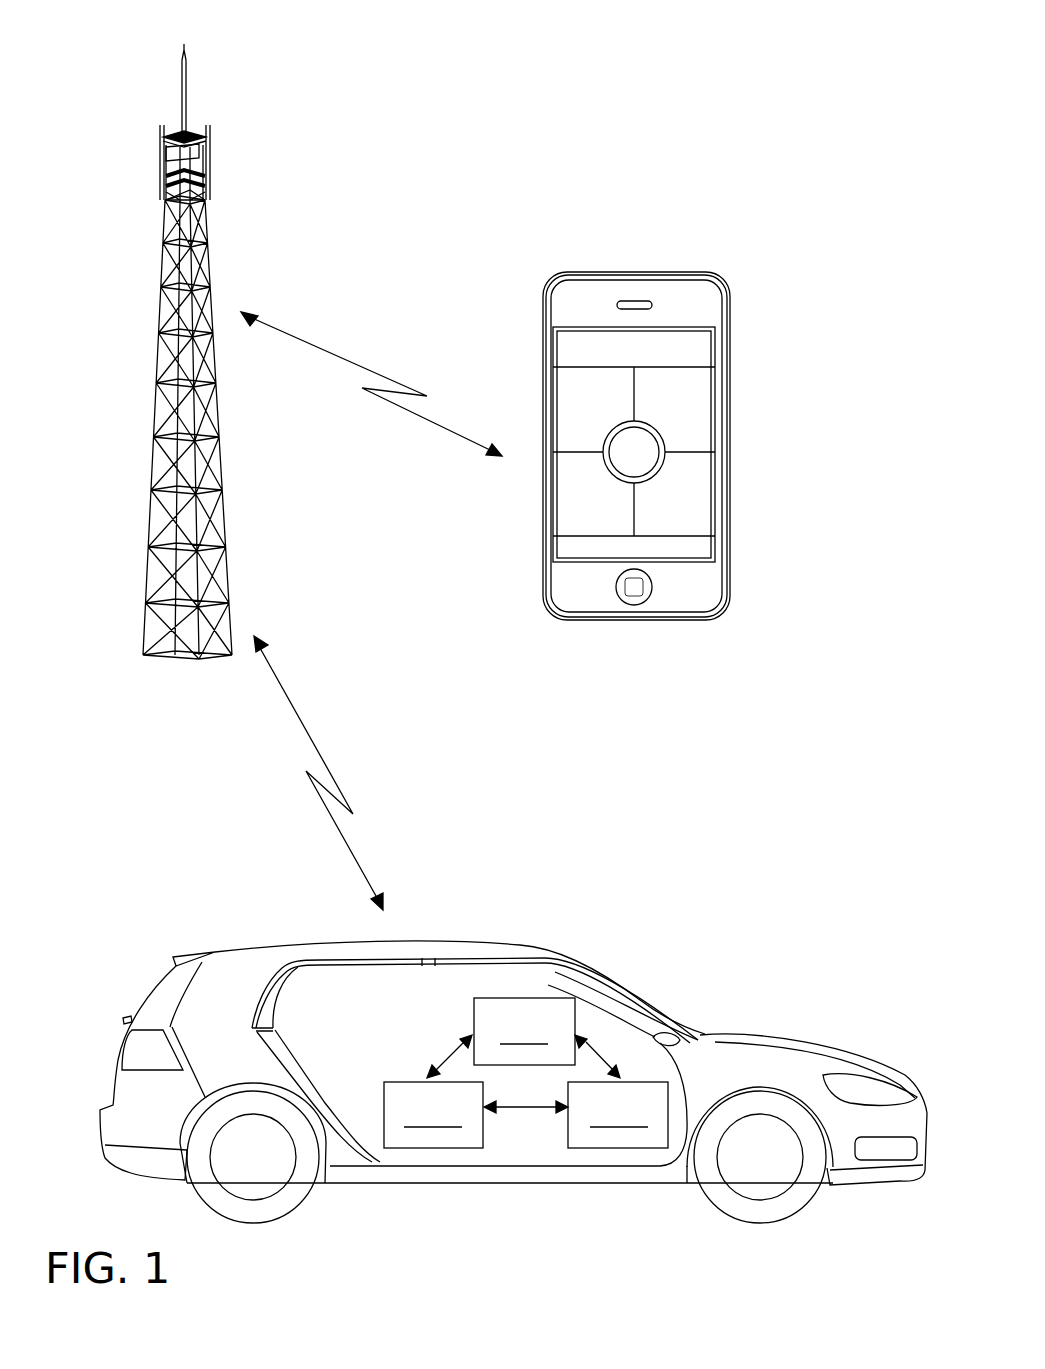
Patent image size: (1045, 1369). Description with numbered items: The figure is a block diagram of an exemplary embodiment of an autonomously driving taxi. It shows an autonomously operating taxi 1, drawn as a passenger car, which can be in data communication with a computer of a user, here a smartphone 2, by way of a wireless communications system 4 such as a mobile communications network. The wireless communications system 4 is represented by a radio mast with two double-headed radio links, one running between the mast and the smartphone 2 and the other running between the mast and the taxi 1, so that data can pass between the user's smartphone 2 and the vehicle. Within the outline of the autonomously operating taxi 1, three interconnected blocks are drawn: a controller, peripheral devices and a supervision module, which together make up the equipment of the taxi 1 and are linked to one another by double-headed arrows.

The autonomously operating taxi 1 is at (418, 1006).
The smartphone 2 is at (662, 435).
The wireless communications system 4 is at (334, 352).